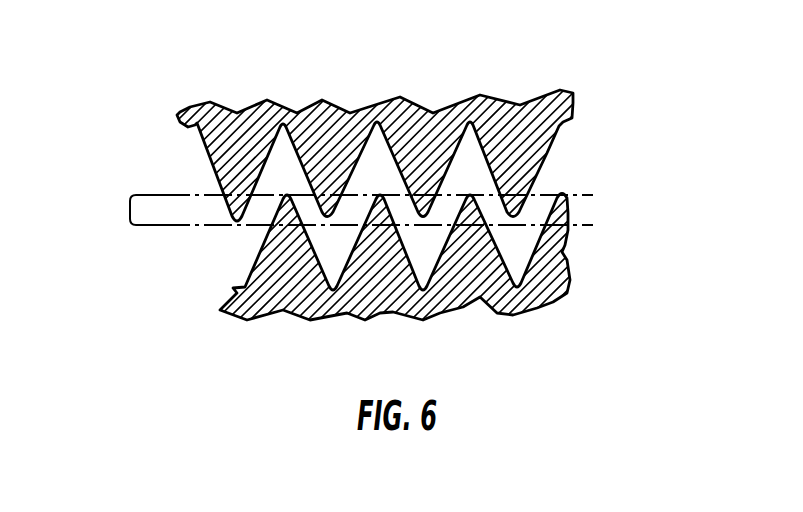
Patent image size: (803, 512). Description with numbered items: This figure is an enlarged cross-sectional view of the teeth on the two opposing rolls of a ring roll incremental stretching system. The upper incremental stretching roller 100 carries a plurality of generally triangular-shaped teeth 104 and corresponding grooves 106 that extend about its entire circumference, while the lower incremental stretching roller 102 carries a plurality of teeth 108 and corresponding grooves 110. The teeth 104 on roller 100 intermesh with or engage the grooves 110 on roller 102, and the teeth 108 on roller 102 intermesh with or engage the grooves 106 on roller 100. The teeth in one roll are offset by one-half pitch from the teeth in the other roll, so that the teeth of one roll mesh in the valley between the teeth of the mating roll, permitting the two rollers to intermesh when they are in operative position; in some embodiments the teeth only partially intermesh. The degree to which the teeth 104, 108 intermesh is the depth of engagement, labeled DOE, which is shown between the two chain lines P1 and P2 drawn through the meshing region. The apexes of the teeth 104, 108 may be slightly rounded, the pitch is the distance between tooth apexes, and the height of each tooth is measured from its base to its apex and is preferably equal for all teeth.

The incremental stretching roller 100 is at (598, 94).
The incremental stretching roller 102 is at (576, 292).
The teeth 104 is at (542, 158).
The grooves 106 is at (470, 130).
The teeth 108 is at (545, 258).
The grooves 110 is at (430, 288).
The first pitch plane P1 is at (203, 227).
The second pitch plane P2 is at (157, 193).
The depth of engagement DOE is at (130, 208).